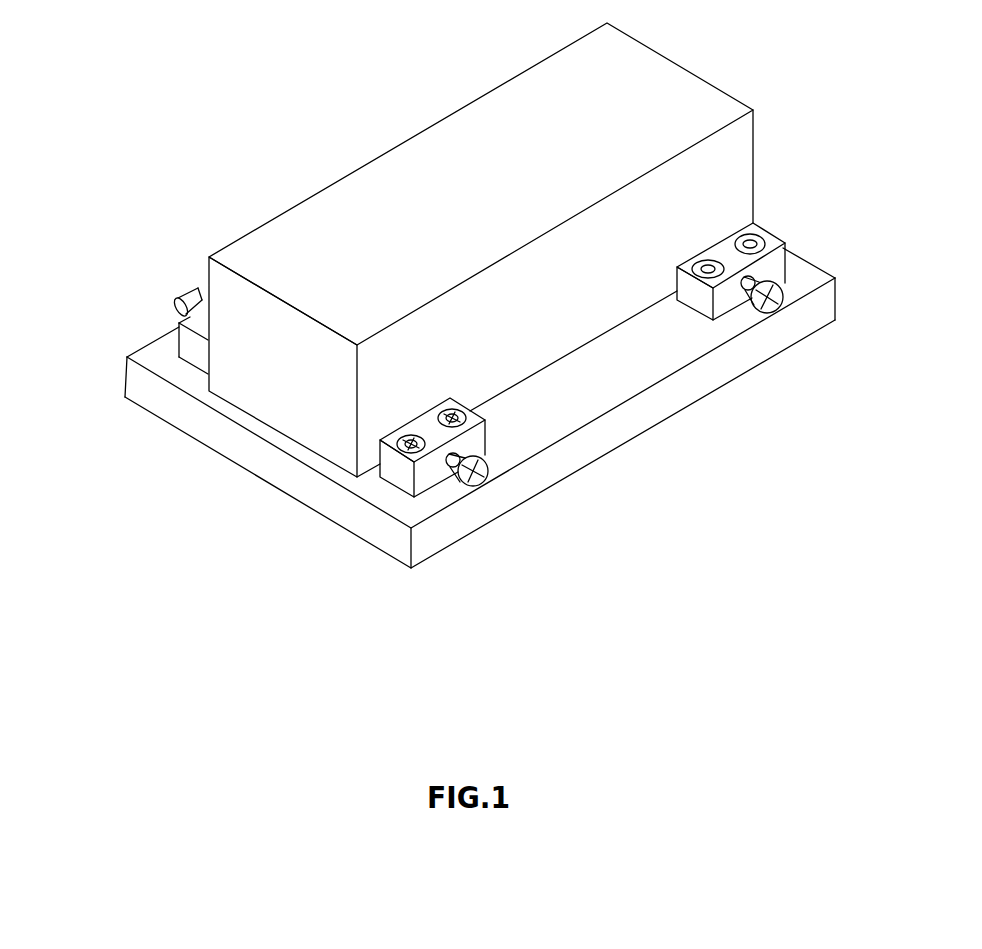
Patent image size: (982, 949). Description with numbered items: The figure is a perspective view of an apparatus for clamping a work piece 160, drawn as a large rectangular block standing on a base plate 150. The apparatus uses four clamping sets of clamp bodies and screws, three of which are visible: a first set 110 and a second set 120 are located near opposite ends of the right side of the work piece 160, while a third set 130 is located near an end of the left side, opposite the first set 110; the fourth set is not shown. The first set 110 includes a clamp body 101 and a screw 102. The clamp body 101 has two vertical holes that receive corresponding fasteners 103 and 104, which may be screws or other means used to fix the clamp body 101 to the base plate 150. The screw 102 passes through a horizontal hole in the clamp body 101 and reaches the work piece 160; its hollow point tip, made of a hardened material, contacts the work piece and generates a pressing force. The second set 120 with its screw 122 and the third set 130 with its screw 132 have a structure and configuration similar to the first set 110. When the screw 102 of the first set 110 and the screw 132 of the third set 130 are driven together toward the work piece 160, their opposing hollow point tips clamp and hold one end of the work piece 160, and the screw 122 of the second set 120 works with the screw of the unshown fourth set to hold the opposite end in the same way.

The clamp body 101 is at (398, 470).
The screw 102 is at (475, 493).
The fastener 103 is at (410, 435).
The fastener 104 is at (452, 410).
The first set 110 is at (496, 482).
The second set 120 is at (778, 330).
The screw 122 is at (760, 287).
The third set 130 is at (129, 279).
The screw 132 is at (188, 290).
The base plate 150 is at (263, 463).
The work piece 160 is at (657, 83).